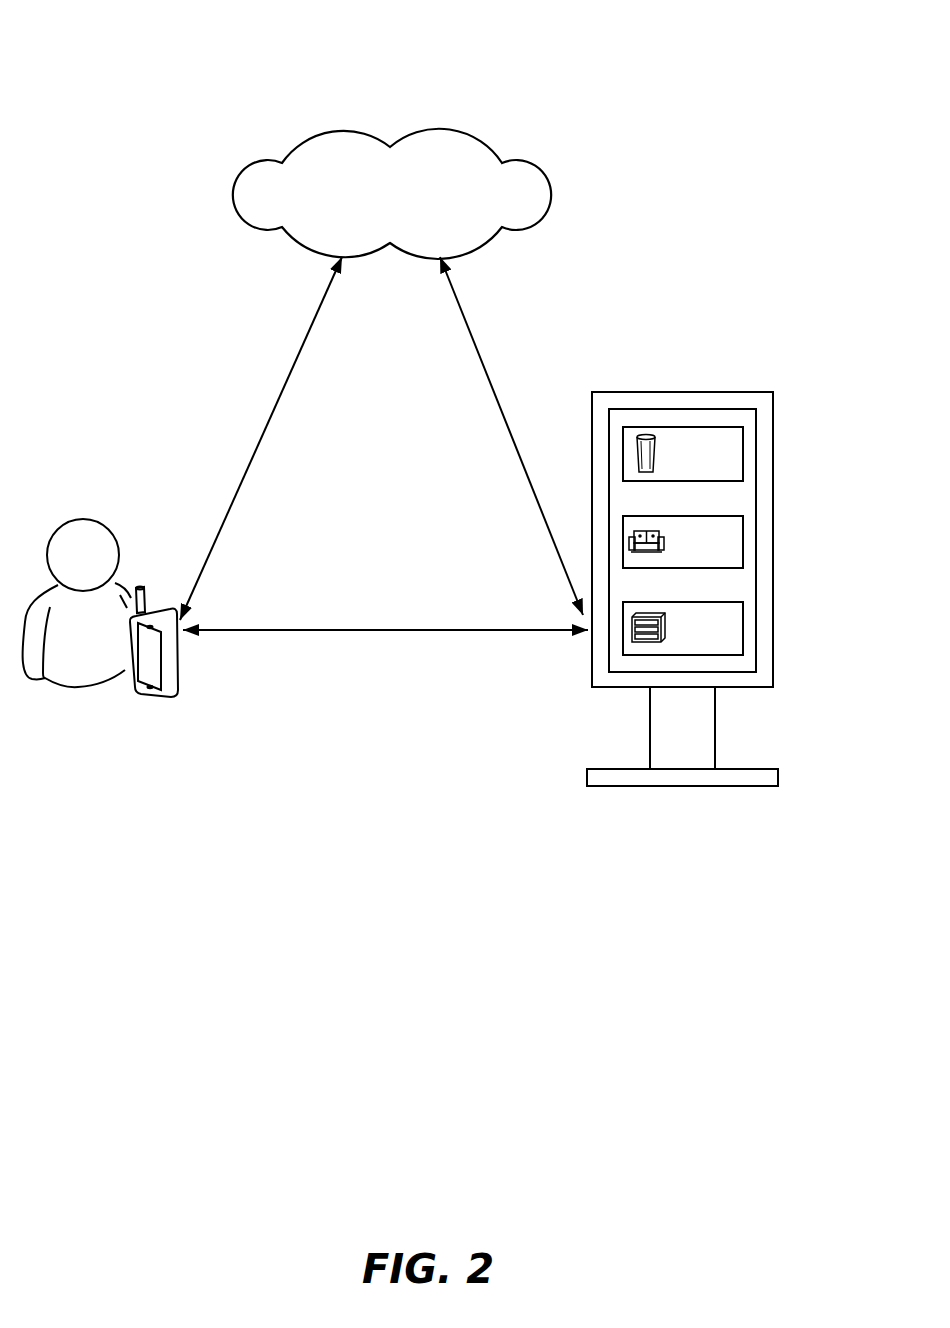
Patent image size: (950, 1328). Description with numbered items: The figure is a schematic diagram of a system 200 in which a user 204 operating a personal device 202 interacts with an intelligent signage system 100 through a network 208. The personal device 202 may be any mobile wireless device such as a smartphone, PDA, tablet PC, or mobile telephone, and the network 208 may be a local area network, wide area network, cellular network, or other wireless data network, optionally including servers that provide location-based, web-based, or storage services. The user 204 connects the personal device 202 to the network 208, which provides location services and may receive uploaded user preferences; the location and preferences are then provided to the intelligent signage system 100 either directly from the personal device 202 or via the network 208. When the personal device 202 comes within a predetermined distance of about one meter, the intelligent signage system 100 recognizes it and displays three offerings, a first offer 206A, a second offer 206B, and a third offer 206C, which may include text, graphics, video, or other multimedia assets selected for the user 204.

The system 200 is at (719, 42).
The network 208 is at (228, 212).
The user 204 is at (77, 521).
The personal device 202 is at (163, 700).
The intelligent signage system 100 is at (700, 392).
The offer_1 206A is at (743, 450).
The offer_2 206B is at (743, 530).
The offer_3 206C is at (743, 615).